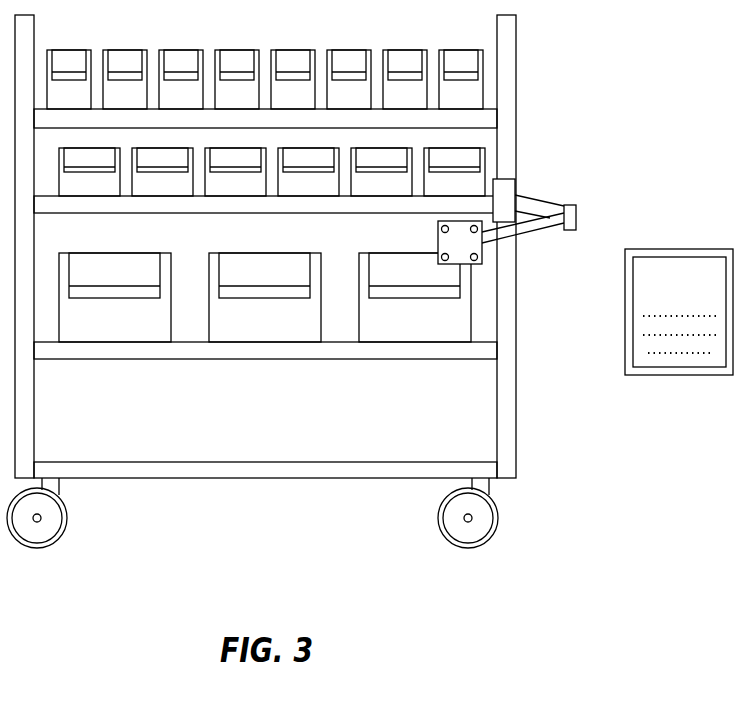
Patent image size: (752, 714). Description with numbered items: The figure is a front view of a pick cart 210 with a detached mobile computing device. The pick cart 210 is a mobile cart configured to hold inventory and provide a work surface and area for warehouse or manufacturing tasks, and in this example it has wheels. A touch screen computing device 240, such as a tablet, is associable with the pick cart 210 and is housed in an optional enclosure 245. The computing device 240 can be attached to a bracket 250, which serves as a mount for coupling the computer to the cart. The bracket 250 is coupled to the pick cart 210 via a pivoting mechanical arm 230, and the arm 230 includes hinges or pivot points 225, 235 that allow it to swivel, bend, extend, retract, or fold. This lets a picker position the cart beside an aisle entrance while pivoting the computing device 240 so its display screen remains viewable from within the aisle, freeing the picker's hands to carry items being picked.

The pick cart 210 is at (506, 50).
The hinge or pivot point 225 is at (517, 178).
The pivoting mechanical arm 230 is at (537, 202).
The hinge or pivot point 235 is at (577, 218).
The computing device 240 is at (652, 355).
The enclosure 245 is at (725, 375).
The bracket 250 is at (470, 245).